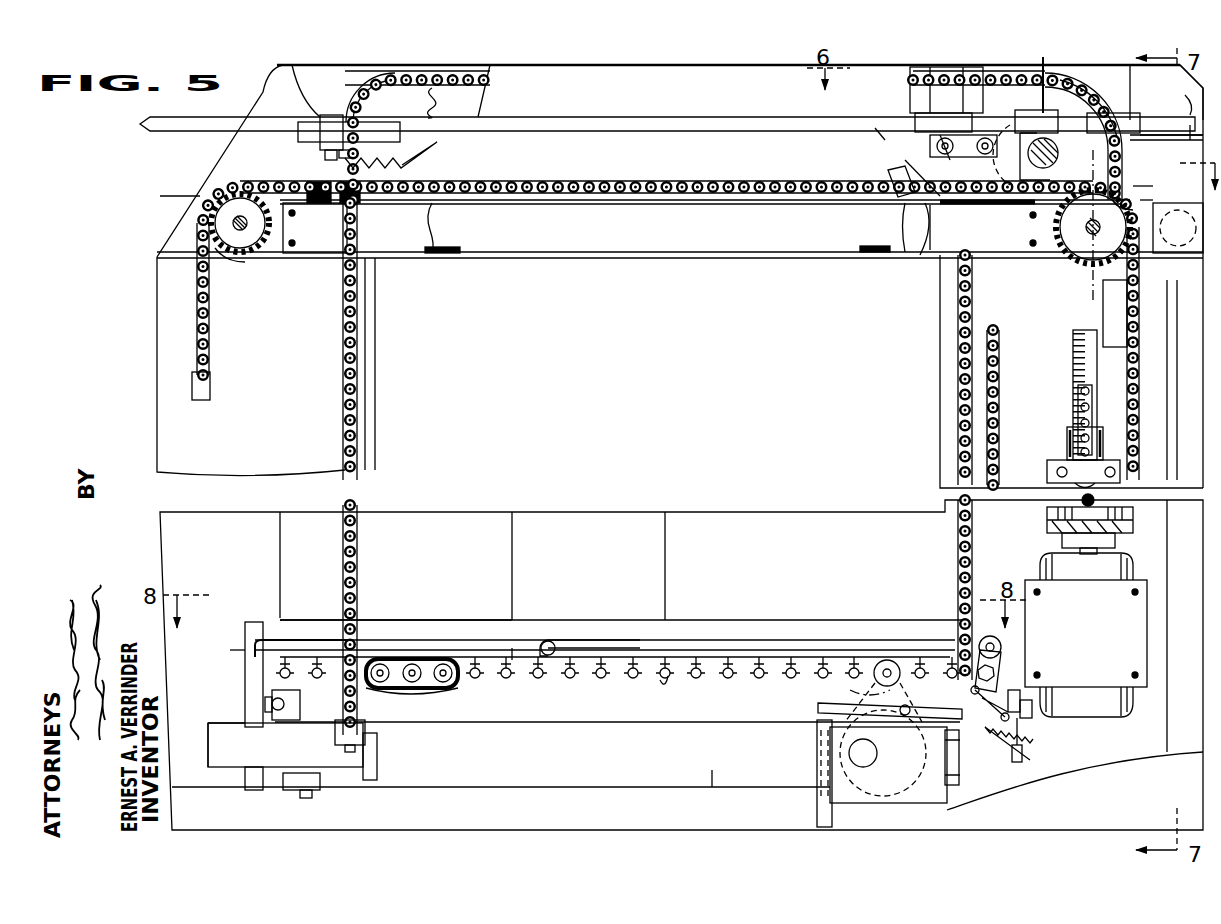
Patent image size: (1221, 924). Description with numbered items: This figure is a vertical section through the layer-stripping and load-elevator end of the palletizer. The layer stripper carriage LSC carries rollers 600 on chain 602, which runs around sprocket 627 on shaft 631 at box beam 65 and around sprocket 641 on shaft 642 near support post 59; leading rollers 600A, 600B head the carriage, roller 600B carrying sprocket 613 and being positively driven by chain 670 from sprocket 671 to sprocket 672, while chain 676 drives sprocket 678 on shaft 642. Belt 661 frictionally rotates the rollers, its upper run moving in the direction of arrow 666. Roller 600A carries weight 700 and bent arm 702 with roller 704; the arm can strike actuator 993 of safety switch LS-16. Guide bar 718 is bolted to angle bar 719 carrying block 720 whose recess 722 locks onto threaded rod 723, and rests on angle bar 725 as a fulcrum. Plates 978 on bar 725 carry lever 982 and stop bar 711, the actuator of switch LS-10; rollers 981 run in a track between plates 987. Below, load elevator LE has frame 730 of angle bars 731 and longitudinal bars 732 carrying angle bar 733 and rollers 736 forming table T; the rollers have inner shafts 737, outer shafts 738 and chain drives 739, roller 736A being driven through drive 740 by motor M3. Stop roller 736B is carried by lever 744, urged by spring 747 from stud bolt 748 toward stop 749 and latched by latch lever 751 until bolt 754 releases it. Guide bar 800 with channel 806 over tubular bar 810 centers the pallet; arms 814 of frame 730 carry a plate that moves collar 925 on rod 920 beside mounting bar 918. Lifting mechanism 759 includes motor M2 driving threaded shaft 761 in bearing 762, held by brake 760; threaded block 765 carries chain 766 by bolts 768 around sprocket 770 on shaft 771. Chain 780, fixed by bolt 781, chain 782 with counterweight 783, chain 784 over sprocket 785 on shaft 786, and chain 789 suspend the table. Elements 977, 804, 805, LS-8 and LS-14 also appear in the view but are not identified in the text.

The box beam 65 is at (667, 102).
The guide bar 718 is at (554, 117).
The safety switch LS-16 is at (327, 157).
The switch actuator 993 is at (348, 205).
The shaft 631 is at (252, 224).
The sprocket 627 is at (232, 258).
The sprocket 671 is at (248, 260).
The rollers 600 is at (672, 180).
The chain 602 is at (208, 352).
The layer stripper carriage LSC is at (585, 174).
The belt 661 is at (438, 222).
The arrow 666 is at (655, 218).
The endless chain 670 is at (441, 255).
The second roller 600A is at (912, 206).
The leading roller 600B is at (922, 258).
The chain 784 is at (490, 80).
The short shaft 786 is at (434, 100).
The sprocket 785 is at (432, 150).
The chain 782 is at (930, 92).
The fixed spaced plates 987 is at (877, 133).
The rollers 981 is at (943, 140).
The switch LS-10 is at (1013, 107).
The roller 704 is at (930, 155).
The bent support arm 702 is at (895, 172).
The weight 700 is at (890, 180).
The stop bar 711 is at (1036, 121).
The shaft 771 is at (1060, 148).
The transverse angle bar 725 is at (1050, 168).
The lever 982 is at (1083, 125).
The vertical plates 978 is at (1043, 58).
The chain guide arc 977 is at (1066, 76).
The threaded transverse rod 723 is at (1178, 86).
The block 720 is at (1188, 106).
The semicylindrical recess 722 is at (1190, 120).
The transverse angle bar 719 is at (1190, 140).
The support post 59 is at (1165, 170).
The chain 676 is at (1140, 186).
The sprocket 672 is at (1141, 200).
The sprocket 770 is at (1005, 205).
The sprocket 613 is at (938, 222).
The sprocket 678 is at (1058, 236).
The sprocket 641 is at (1063, 262).
The shaft 642 is at (1066, 272).
The counterweight 783 is at (1103, 328).
The lifting mechanism 759 is at (1071, 380).
The vertical threaded shaft 761 is at (1078, 393).
The chain 766 is at (1078, 409).
The internally threaded block 765 is at (1068, 441).
The bolts 768 is at (1060, 466).
The magnetic brake 760 is at (1047, 520).
The bearing 762 is at (1062, 541).
The motor M2 is at (1040, 569).
The chain 780 is at (958, 541).
The stop roller 736B is at (1002, 645).
The lever 744 is at (1000, 662).
The fixed stops 749 is at (1006, 692).
The limit switch LS-8 is at (1028, 720).
The fixed stud bolts 748 is at (1024, 752).
The springs 747 is at (1015, 756).
The table T is at (718, 654).
The load elevator LE is at (513, 654).
The guide bar 800 is at (612, 640).
The tubular outer shafts 738 is at (443, 660).
The sprocket and chain drive units 739 is at (410, 690).
The longitudinal angle bar 733 is at (633, 714).
The hexagonal inner shafts 737 is at (668, 682).
The rollers 736 is at (805, 660).
The driven roller 736A is at (878, 668).
The sprocket and chain drive 740 is at (870, 691).
The latch levers 751 is at (962, 690).
The bolts 754 is at (818, 708).
The motor M3 is at (880, 803).
The special bolt 781 is at (959, 760).
The transverse angle bars 731 is at (363, 753).
The rigid frame 730 is at (566, 781).
The longitudinal bars 732 is at (714, 782).
The chain 789 is at (343, 551).
The rail 804 is at (268, 648).
The post 805 is at (258, 683).
The mounting bar 918 is at (252, 651).
The arms 814 is at (229, 731).
The limit switch LS-14 is at (285, 745).
The inverted channel member 806 is at (290, 692).
The tubular bar 810 is at (285, 706).
The collar 925 is at (300, 790).
The rod 920 is at (310, 798).